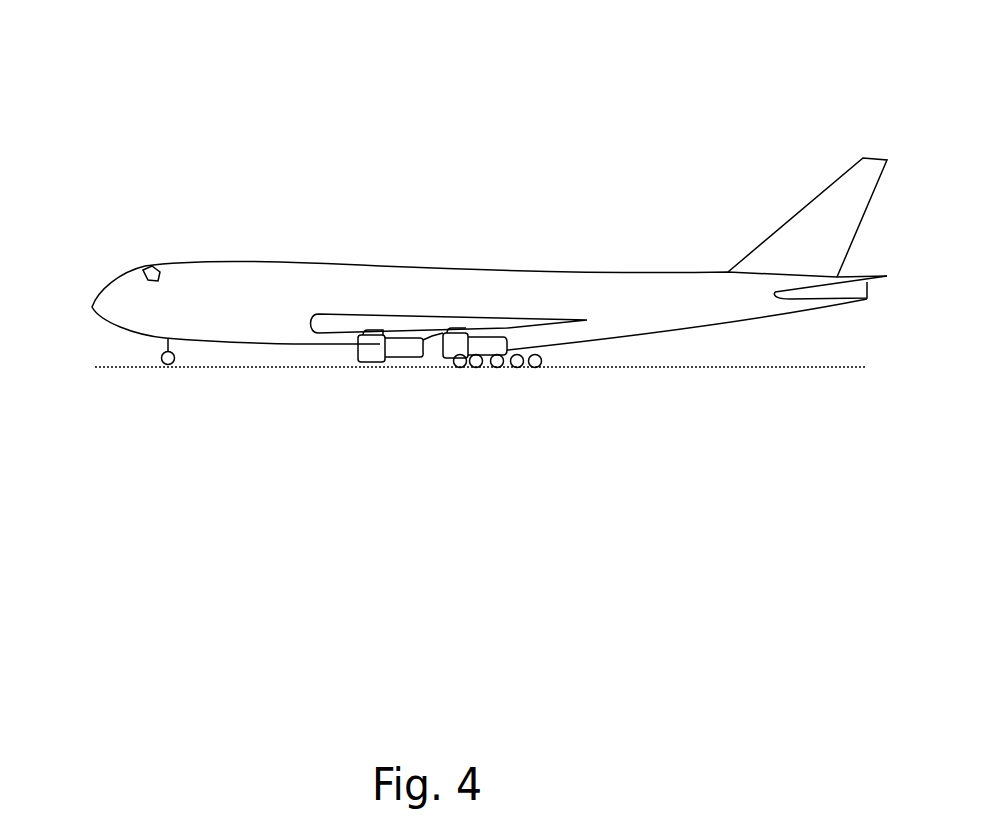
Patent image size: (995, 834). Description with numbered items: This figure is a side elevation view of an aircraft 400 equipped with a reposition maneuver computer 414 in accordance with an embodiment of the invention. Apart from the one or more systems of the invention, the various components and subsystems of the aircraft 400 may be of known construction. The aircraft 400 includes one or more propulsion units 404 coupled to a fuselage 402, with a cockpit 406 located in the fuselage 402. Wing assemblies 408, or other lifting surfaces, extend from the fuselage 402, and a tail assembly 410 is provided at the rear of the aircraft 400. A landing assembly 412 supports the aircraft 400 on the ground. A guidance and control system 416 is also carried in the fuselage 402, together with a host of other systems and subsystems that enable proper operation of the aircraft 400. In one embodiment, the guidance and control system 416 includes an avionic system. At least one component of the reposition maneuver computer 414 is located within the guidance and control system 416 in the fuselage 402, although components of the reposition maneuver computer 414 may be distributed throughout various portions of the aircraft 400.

The aircraft 400 is at (188, 67).
The fuselage 402 is at (512, 270).
The propulsion units 404 is at (368, 343).
The cockpit 406 is at (140, 268).
The wing assemblies 408 is at (340, 318).
The tail assembly 410 is at (805, 228).
The landing assembly 412 is at (492, 352).
The reposition maneuver computer 414 is at (165, 275).
The guidance and control system 416 is at (545, 283).